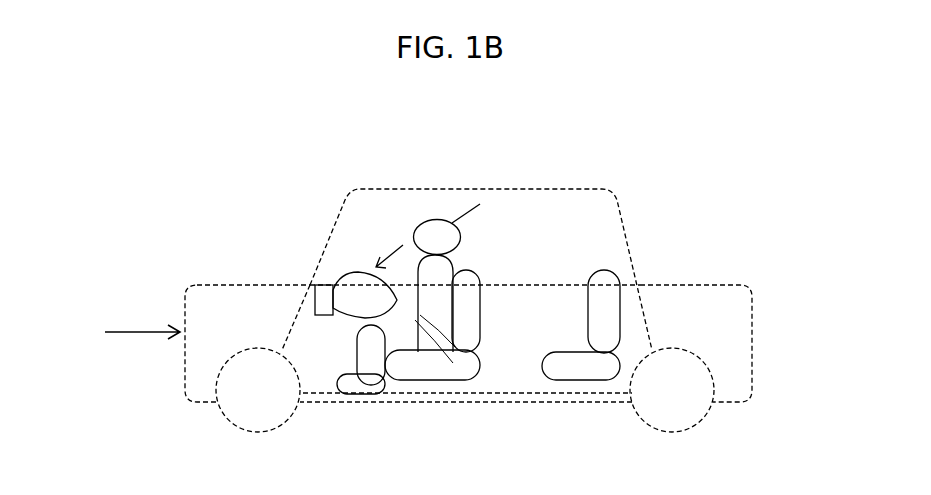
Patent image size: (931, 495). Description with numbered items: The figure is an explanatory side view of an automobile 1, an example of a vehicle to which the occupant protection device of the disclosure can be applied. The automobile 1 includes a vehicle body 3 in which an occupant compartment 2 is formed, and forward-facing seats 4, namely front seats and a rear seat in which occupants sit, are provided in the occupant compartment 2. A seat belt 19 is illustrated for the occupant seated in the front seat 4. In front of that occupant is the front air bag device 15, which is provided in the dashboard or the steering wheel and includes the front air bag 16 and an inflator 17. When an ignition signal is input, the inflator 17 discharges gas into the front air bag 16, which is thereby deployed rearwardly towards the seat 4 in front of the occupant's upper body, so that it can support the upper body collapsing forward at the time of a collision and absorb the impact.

The automobile 1 is at (729, 212).
The occupant compartment 2 is at (585, 215).
The vehicle body 3 is at (223, 313).
The seat 4 is at (470, 327).
The front air bag device 15 is at (330, 218).
The front air bag 16 is at (347, 277).
The inflator 17 is at (320, 282).
The seat belt 19 is at (458, 220).